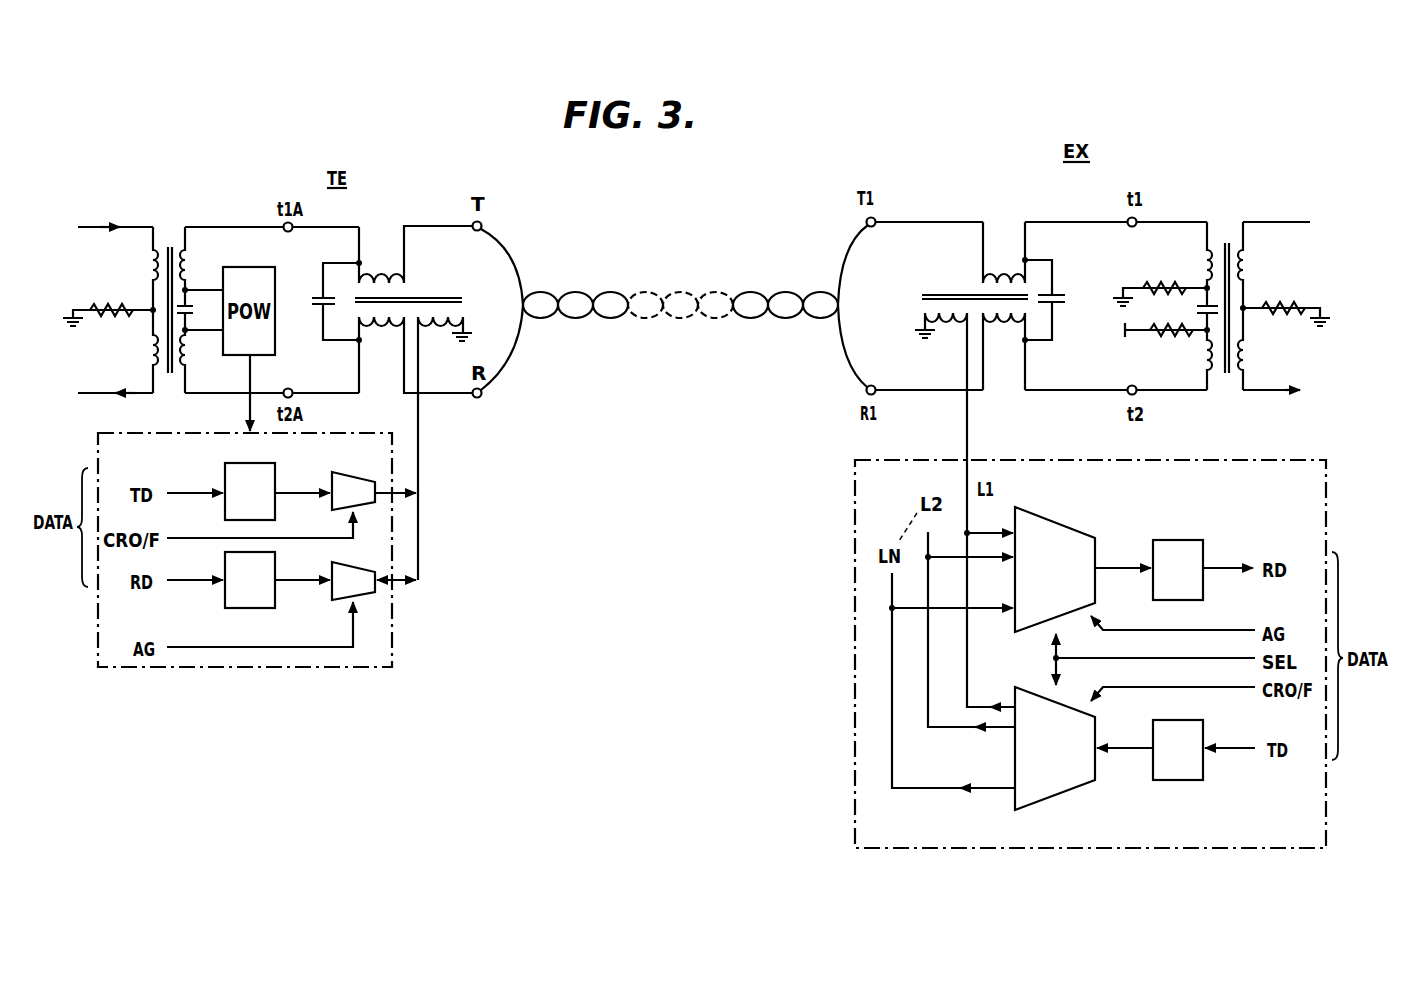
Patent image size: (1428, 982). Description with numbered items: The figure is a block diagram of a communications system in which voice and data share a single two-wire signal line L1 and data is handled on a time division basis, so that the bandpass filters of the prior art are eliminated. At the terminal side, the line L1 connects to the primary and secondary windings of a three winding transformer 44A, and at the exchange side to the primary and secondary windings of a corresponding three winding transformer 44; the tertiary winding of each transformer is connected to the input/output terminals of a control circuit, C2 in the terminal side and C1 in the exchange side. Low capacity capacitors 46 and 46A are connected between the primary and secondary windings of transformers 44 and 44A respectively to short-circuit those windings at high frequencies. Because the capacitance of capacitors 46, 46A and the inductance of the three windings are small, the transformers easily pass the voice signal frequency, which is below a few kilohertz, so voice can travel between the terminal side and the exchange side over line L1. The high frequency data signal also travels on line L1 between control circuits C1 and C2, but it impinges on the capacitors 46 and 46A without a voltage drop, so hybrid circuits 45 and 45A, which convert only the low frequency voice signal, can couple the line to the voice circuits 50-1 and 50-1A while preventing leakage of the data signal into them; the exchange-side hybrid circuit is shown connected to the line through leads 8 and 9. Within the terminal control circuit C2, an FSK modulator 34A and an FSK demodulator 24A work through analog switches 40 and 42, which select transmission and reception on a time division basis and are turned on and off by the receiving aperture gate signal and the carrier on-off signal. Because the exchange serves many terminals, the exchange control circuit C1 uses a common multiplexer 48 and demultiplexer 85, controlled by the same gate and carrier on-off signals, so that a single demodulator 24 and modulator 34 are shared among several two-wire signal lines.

The tip lead 8 is at (905, 221).
The ring lead 9 is at (892, 389).
The demodulator 24 is at (1177, 539).
The FSK demodulator 24A is at (226, 602).
The modulator 34 is at (1205, 781).
The FSK modulator 34A is at (222, 470).
The analog switch 40 is at (332, 596).
The analog switch 42 is at (345, 478).
The three winding transformer 44 is at (960, 282).
The three winding transformer 44A is at (417, 293).
The hybrid circuit 45 is at (1233, 193).
The hybrid circuit 45A is at (183, 202).
The low capacity capacitor 46 is at (1065, 292).
The low capacity capacitor 46A is at (316, 292).
The multiplexer 48 is at (1090, 537).
The demultiplexer 85 is at (1072, 795).
The subscriber voice circuit 50-1 is at (1317, 290).
The subscriber voice circuit 50-1A is at (92, 291).
The 2-wire signal line L1 is at (690, 292).
The control circuit C1 is at (856, 784).
The control circuit C2 is at (238, 668).